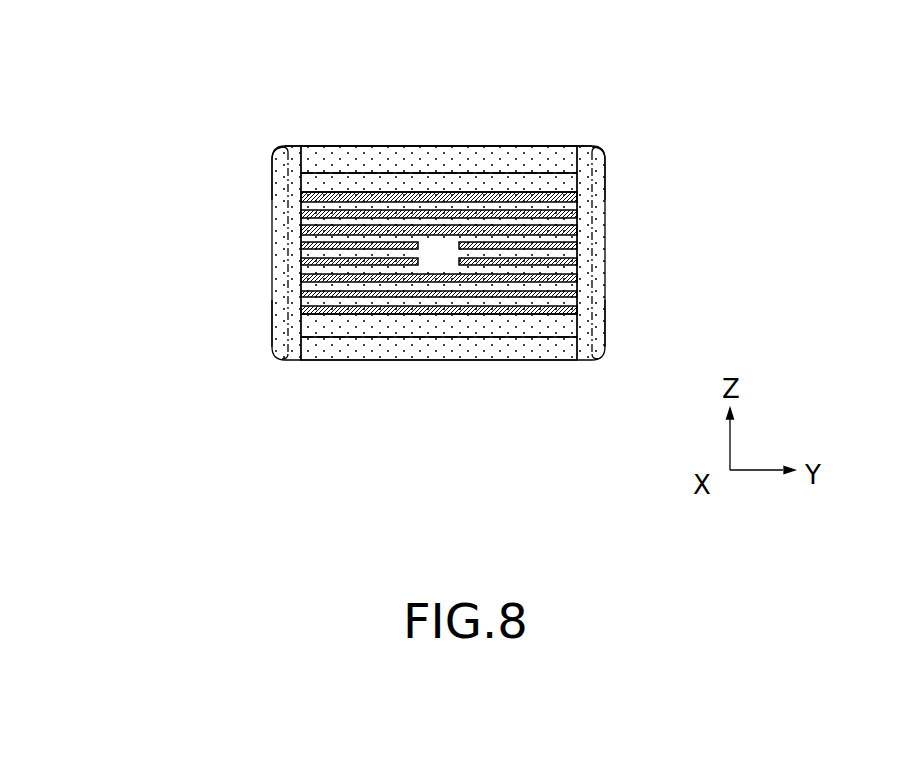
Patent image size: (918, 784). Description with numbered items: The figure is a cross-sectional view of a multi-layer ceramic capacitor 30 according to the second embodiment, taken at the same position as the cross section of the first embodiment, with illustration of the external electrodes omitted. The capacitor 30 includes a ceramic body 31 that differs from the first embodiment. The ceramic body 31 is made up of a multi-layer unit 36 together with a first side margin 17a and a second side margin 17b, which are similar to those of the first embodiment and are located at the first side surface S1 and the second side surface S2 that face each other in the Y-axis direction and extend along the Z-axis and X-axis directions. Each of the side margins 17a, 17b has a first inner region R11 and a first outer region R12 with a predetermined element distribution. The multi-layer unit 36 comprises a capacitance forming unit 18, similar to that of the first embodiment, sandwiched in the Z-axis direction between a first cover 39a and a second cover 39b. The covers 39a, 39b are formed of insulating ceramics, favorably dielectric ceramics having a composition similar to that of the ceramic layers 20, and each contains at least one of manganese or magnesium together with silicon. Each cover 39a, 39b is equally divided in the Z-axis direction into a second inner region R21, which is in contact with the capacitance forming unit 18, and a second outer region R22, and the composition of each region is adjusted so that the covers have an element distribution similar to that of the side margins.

The multi-layer ceramic capacitor 30 is at (258, 68).
The ceramic body 31 is at (588, 92).
The multi-layer unit 36 is at (472, 128).
The first cover 39a is at (440, 80).
The second cover 39b is at (450, 437).
The first inner region R11 is at (278, 152).
The first outer region R12 is at (280, 166).
The second inner region R21 is at (324, 180).
The second outer region R22 is at (395, 163).
The first side margin 17a is at (172, 108).
The second side margin 17b is at (712, 118).
The ceramic layers 20 is at (579, 197).
The capacitance forming unit 18 is at (455, 266).
The first side surface S1 is at (300, 327).
The second side surface S2 is at (580, 325).